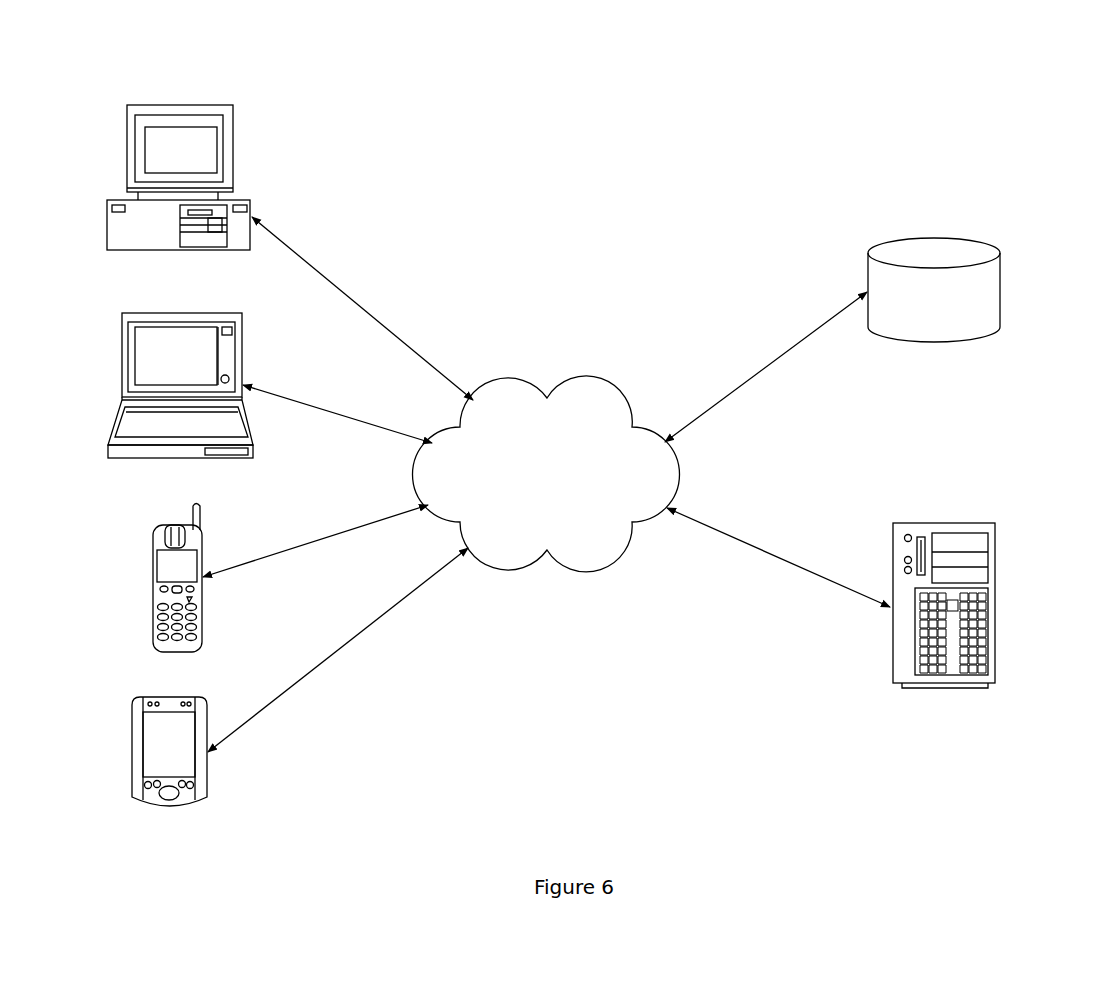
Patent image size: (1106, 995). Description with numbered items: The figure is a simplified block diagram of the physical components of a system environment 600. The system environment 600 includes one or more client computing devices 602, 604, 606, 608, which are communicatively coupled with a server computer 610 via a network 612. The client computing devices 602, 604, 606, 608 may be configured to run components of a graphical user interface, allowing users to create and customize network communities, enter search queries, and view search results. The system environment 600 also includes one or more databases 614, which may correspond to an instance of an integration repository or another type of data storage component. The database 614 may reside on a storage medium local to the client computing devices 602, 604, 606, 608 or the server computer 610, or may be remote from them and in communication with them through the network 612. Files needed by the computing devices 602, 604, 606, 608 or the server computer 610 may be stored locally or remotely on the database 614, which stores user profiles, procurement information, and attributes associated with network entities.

The system environment 600 is at (1040, 152).
The client computing device 602 is at (182, 106).
The client computing device 604 is at (182, 313).
The client computing device 606 is at (176, 523).
The client computing device 608 is at (176, 697).
The server computer 610 is at (942, 523).
The network 612 is at (545, 474).
The database 614 is at (972, 233).